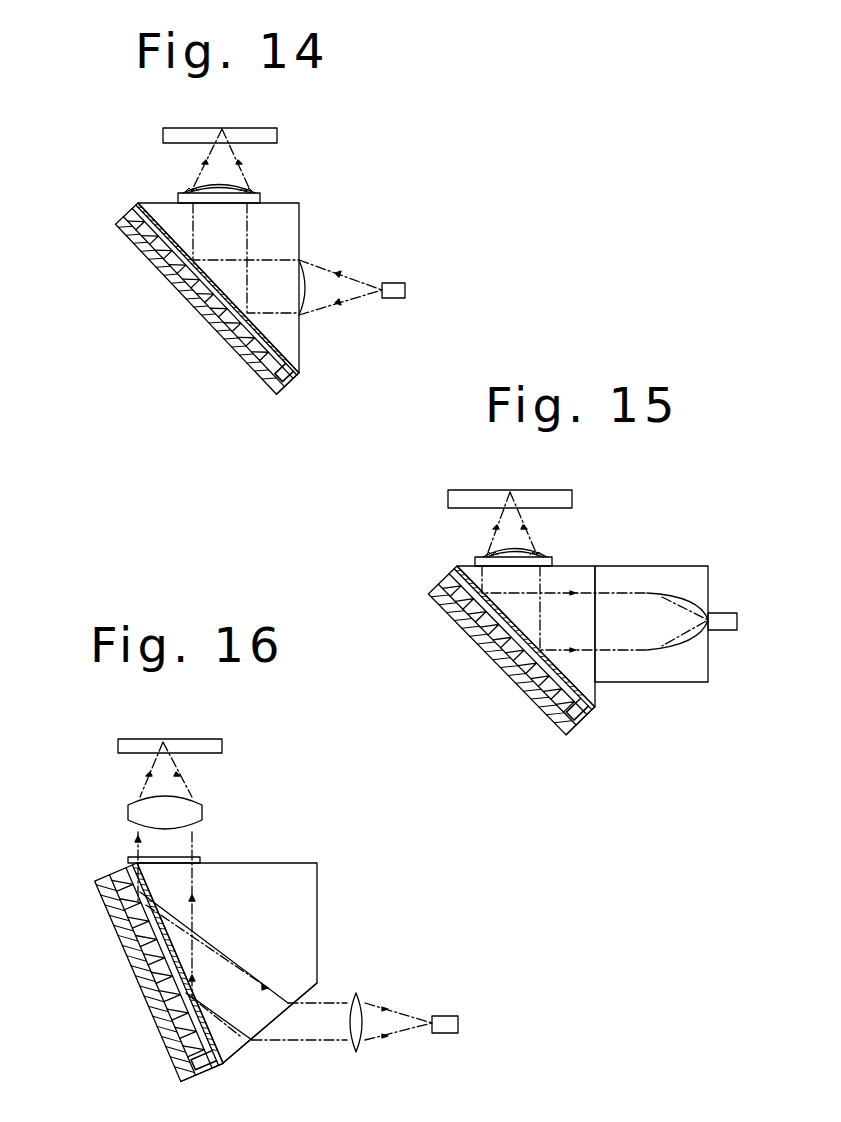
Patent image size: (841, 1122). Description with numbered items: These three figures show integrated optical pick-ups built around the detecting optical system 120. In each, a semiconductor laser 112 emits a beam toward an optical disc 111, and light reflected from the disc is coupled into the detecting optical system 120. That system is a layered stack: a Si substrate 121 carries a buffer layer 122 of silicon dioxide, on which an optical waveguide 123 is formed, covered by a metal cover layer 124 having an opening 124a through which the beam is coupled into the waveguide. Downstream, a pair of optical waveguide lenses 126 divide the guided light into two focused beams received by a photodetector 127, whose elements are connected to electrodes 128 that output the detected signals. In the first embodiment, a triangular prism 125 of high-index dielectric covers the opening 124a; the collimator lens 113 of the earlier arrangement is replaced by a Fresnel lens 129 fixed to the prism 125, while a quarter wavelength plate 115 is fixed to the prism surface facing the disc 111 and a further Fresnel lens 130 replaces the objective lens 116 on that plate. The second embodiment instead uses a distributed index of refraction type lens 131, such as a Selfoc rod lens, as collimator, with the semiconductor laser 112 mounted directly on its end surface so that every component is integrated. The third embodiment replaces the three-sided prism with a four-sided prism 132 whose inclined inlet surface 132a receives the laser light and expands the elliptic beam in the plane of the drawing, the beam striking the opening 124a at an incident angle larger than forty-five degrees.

In FIG. 14, the optical disc 111 is at (255, 134).
In FIG. 15, the optical disc 111 is at (548, 490).
In FIG. 16, the optical disc 111 is at (200, 740).
In FIG. 14, the semiconductor laser 112 is at (392, 283).
In FIG. 15, the semiconductor laser 112 is at (723, 613).
In FIG. 16, the semiconductor laser 112 is at (442, 1033).
In FIG. 16, the collimator lens 113 is at (357, 1045).
In FIG. 14, the quarter wavelength plate 115 is at (180, 198).
In FIG. 15, the quarter wavelength plate 115 is at (550, 560).
In FIG. 16, the quarter wavelength plate 115 is at (200, 860).
In FIG. 16, the objective lens 116 is at (190, 810).
In FIG. 14, the detecting optical system 120 is at (292, 223).
In FIG. 15, the detecting optical system 120 is at (588, 688).
In FIG. 16, the detecting optical system 120 is at (257, 870).
In FIG. 14, the Si substrate 121 is at (133, 242).
In FIG. 15, the Si substrate 121 is at (527, 692).
In FIG. 16, the Si substrate 121 is at (172, 1040).
In FIG. 14, the buffer layer 122 is at (223, 320).
In FIG. 15, the buffer layer 122 is at (512, 672).
In FIG. 16, the buffer layer 122 is at (152, 962).
In FIG. 14, the optical waveguide 123 is at (200, 302).
In FIG. 15, the optical waveguide 123 is at (492, 652).
In FIG. 16, the optical waveguide 123 is at (143, 925).
In FIG. 14, the metal cover layer 124 is at (165, 258).
In FIG. 15, the metal cover layer 124 is at (440, 605).
In FIG. 16, the metal cover layer 124 is at (215, 1050).
In FIG. 14, the opening 124a is at (198, 281).
In FIG. 15, the opening 124a is at (475, 628).
In FIG. 16, the opening 124a is at (140, 898).
In FIG. 14, the prism 125 is at (272, 212).
In FIG. 15, the prism 125 is at (585, 575).
In FIG. 14, the optical waveguide lenses 126 is at (250, 340).
In FIG. 15, the optical waveguide lenses 126 is at (548, 718).
In FIG. 16, the optical waveguide lenses 126 is at (180, 1013).
In FIG. 14, the photodetector 127 is at (275, 385).
In FIG. 15, the photodetector 127 is at (556, 732).
In FIG. 16, the photodetector 127 is at (190, 1072).
In FIG. 14, the electrodes 128 is at (290, 382).
In FIG. 15, the electrodes 128 is at (575, 728).
In FIG. 16, the electrodes 128 is at (205, 1065).
In FIG. 14, the Fresnel lens 129 is at (310, 292).
In FIG. 14, the Fresnel lens 130 is at (218, 186).
In FIG. 15, the Fresnel lens 130 is at (507, 550).
In FIG. 15, the distributed index of refraction type lens 131 is at (680, 660).
In FIG. 16, the four-sided prism 132 is at (305, 873).
In FIG. 16, the inclined surface 132a is at (318, 988).